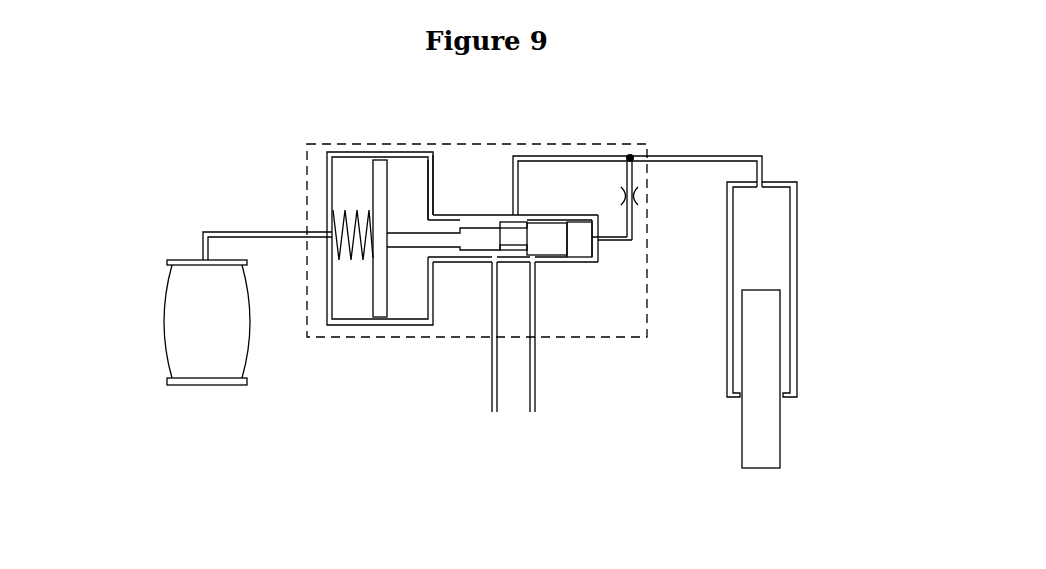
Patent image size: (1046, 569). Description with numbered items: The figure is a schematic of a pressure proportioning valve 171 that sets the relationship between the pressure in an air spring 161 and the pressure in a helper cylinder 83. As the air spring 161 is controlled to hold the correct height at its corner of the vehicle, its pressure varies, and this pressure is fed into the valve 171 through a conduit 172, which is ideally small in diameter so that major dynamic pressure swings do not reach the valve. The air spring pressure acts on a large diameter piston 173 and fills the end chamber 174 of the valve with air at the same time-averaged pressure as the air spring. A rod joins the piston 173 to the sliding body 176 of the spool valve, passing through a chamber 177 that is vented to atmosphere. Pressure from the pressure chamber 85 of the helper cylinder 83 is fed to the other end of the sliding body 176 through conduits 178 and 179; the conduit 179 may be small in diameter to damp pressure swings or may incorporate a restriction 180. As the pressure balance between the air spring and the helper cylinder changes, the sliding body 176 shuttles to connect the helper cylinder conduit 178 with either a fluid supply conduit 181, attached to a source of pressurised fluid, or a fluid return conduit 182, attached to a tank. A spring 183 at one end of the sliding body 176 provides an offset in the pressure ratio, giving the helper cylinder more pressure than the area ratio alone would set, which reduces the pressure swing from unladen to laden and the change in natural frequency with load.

The air spring 161 is at (178, 298).
The valve 171 is at (309, 354).
The conduit 172 is at (222, 236).
The large diameter piston 173 is at (378, 175).
The end chamber 174 is at (347, 190).
The sliding body 176 is at (543, 237).
The chamber 177 is at (411, 180).
The conduit 178 is at (578, 160).
The conduit 179 is at (617, 250).
The restriction 180 is at (635, 204).
The fluid supply conduit 181 is at (535, 365).
The fluid return conduit 182 is at (493, 358).
The spring 183 is at (343, 212).
The pressure chamber 85 is at (775, 220).
The helper cylinder 83 is at (814, 305).